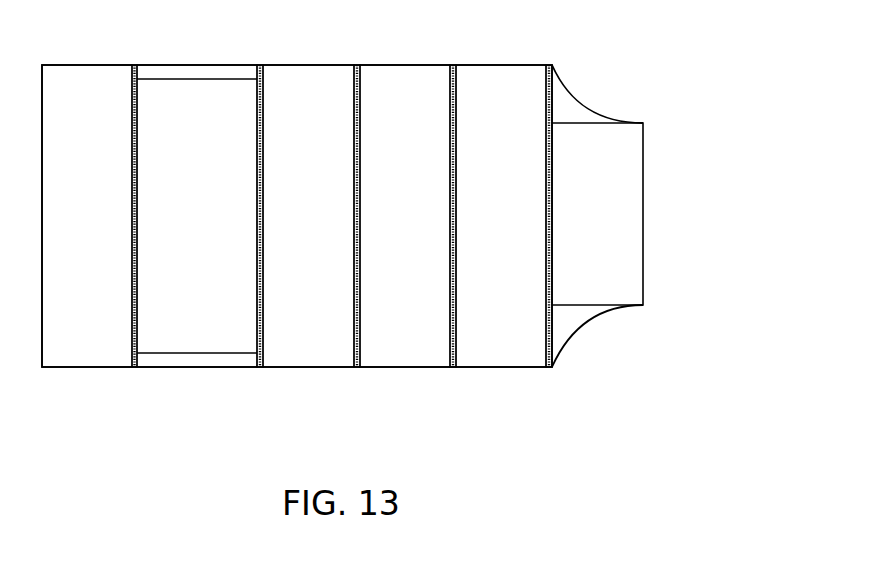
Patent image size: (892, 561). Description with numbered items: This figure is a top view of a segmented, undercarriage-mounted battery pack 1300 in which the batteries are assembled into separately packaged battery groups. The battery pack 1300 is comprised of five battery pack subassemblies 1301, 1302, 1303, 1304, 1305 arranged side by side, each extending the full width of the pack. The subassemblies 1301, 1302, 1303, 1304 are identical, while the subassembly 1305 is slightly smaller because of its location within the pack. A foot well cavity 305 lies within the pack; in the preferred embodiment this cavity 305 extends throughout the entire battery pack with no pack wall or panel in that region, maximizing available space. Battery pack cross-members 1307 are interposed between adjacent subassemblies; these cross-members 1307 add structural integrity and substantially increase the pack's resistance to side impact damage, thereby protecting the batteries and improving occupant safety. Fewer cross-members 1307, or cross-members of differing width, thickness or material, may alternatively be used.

The battery pack 1300 is at (690, 62).
The battery pack subassembly 1301 is at (62, 218).
The foot well cavity 305 is at (182, 218).
The battery pack subassembly 1302 is at (337, 219).
The battery pack subassembly 1303 is at (432, 219).
The battery pack subassembly 1304 is at (470, 219).
The battery pack subassembly 1305 is at (571, 219).
The battery pack cross-members 1307 is at (549, 367).